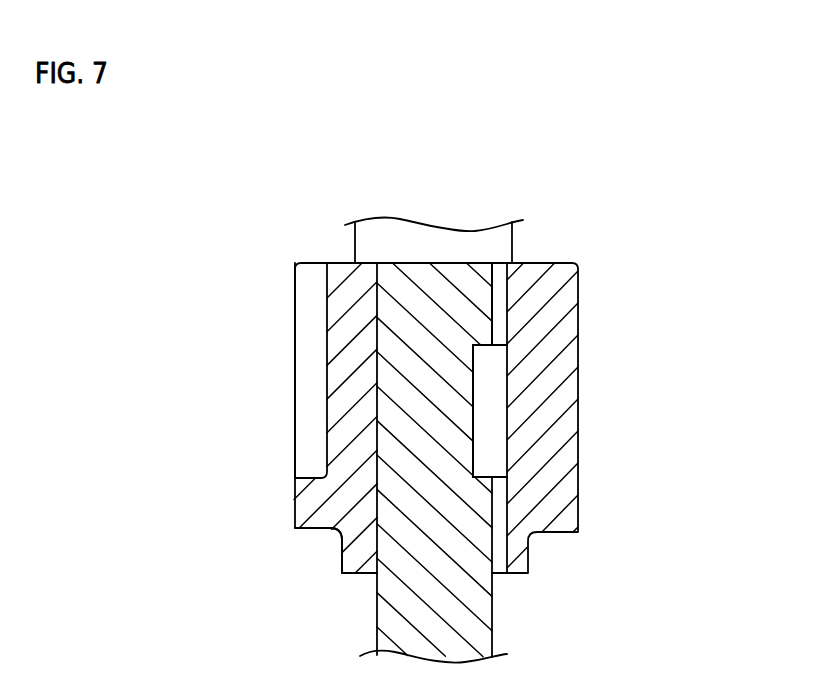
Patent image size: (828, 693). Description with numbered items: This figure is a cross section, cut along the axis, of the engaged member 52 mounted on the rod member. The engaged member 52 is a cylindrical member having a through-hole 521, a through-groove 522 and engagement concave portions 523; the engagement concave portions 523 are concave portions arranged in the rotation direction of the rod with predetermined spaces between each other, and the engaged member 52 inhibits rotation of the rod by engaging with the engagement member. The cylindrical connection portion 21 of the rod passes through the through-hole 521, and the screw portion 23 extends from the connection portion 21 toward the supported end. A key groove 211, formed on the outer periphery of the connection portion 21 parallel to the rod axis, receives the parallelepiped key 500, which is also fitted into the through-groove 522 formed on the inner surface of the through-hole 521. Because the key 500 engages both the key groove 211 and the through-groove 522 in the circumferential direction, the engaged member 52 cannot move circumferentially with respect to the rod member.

The engaged member 52 is at (257, 257).
The through-hole 521 is at (352, 573).
The through-groove 522 is at (498, 297).
The engagement concave portions 523 is at (307, 350).
The key 500 is at (488, 367).
The connection portion 21 is at (430, 420).
The key groove 211 is at (472, 457).
The screw portion 23 is at (387, 247).